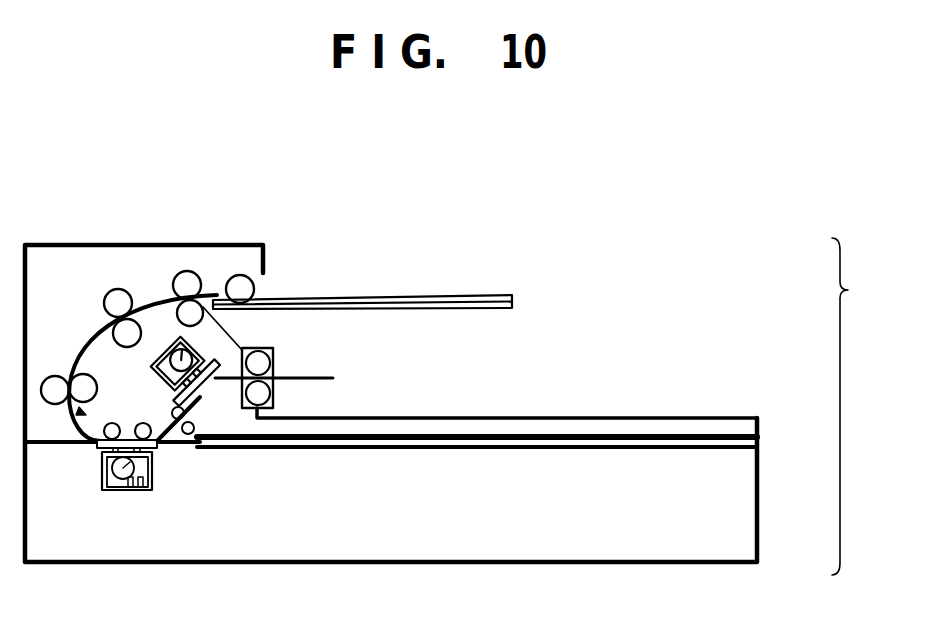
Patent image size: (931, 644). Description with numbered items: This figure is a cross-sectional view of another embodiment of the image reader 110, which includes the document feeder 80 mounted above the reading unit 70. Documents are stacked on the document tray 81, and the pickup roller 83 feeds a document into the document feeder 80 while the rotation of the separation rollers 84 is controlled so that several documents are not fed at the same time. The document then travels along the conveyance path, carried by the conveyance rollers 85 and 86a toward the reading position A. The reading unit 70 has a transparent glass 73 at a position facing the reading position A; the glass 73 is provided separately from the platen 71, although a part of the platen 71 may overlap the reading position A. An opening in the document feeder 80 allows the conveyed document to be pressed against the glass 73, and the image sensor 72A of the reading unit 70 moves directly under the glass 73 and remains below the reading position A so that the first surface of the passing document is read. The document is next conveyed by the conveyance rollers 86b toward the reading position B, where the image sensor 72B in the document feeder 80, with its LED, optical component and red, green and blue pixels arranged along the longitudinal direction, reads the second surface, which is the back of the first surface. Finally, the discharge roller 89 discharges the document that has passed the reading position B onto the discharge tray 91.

The image reader 110 is at (867, 406).
The document feeder 80 is at (770, 366).
The reading unit 70 is at (771, 434).
The platen 71 is at (512, 450).
The image sensor 72A is at (120, 493).
The image sensor 72B is at (200, 352).
The transparent glass 73 is at (97, 443).
The document tray 81 is at (480, 312).
The pickup roller 83 is at (241, 280).
The separation rollers 84 is at (185, 283).
The conveyance rollers 85 is at (117, 298).
The conveyance rollers 86a is at (53, 384).
The conveyance rollers 86b is at (190, 436).
The discharge roller 89 is at (273, 393).
The discharge tray 91 is at (558, 417).
The reading position A is at (125, 437).
The reading position B is at (223, 400).